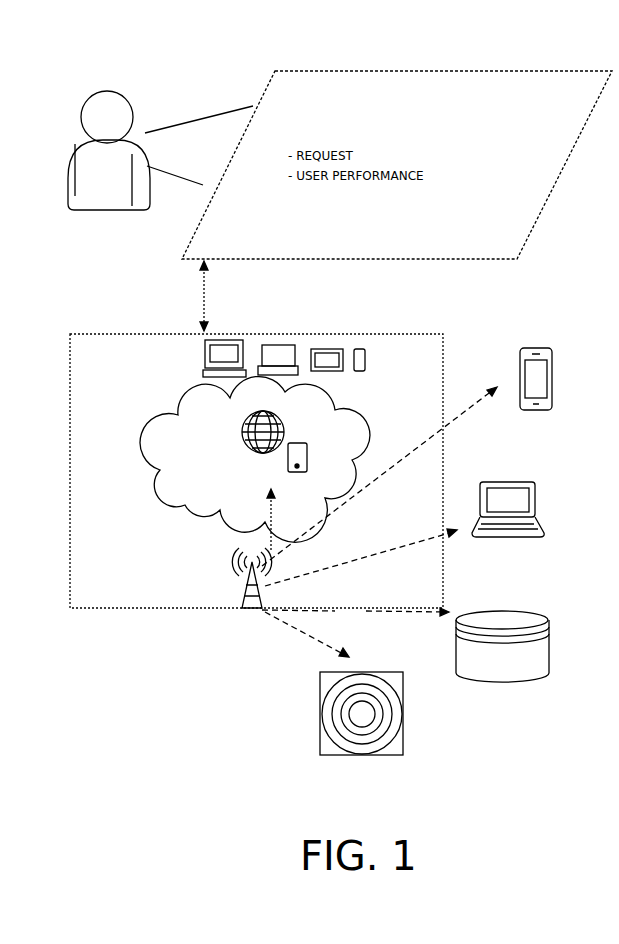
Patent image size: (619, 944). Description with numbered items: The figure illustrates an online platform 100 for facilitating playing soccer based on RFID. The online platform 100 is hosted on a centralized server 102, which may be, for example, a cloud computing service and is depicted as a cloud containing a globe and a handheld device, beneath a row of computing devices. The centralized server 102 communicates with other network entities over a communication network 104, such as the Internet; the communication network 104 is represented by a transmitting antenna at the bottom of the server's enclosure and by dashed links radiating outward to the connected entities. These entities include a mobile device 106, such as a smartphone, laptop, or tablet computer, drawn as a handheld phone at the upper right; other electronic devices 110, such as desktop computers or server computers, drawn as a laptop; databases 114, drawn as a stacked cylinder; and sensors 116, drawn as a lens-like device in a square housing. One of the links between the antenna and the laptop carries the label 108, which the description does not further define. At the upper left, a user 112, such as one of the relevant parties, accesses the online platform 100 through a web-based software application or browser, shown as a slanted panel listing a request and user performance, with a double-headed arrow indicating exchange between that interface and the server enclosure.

The online platform 100 is at (264, 319).
The centralized server 102 is at (255, 460).
The communication network 104 is at (379, 522).
The mobile device 106 is at (556, 383).
The communication link 108 is at (361, 557).
The other electronic devices 110 is at (538, 512).
The user 112 is at (135, 106).
The databases 114 is at (552, 640).
The sensors 116 is at (405, 735).